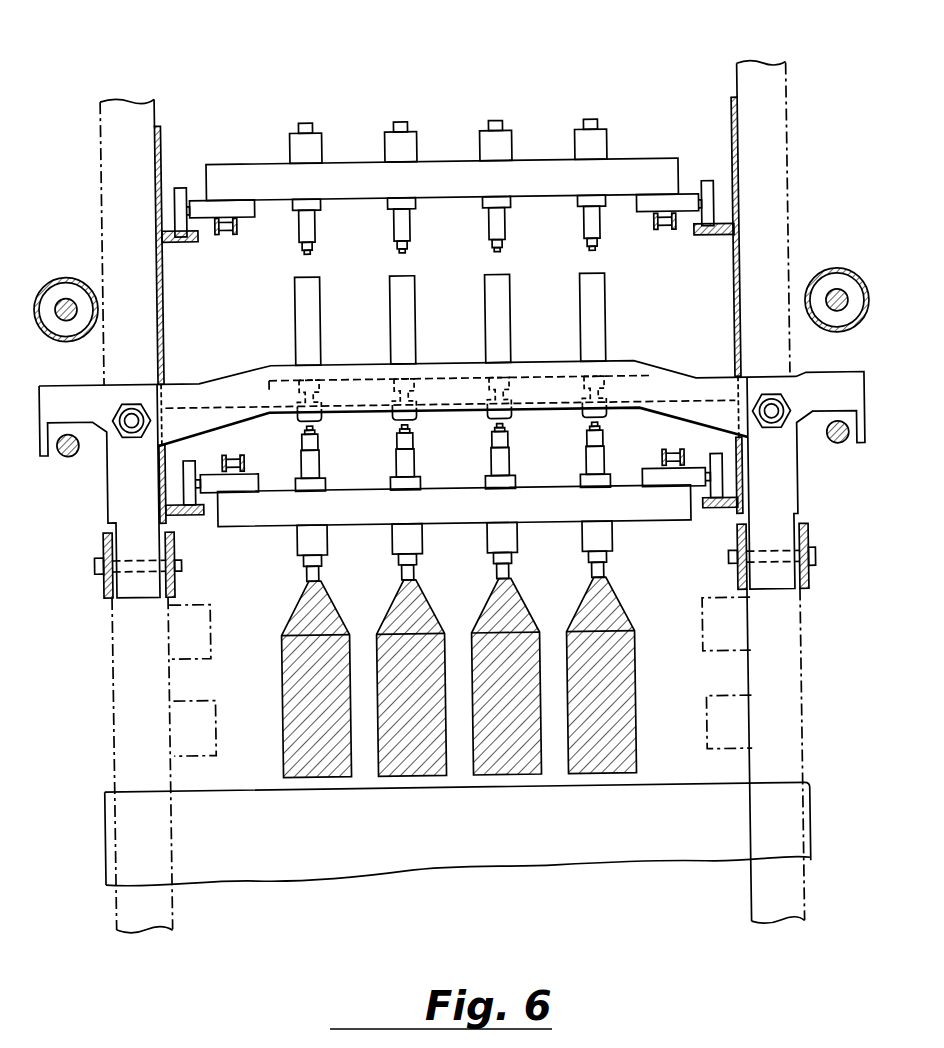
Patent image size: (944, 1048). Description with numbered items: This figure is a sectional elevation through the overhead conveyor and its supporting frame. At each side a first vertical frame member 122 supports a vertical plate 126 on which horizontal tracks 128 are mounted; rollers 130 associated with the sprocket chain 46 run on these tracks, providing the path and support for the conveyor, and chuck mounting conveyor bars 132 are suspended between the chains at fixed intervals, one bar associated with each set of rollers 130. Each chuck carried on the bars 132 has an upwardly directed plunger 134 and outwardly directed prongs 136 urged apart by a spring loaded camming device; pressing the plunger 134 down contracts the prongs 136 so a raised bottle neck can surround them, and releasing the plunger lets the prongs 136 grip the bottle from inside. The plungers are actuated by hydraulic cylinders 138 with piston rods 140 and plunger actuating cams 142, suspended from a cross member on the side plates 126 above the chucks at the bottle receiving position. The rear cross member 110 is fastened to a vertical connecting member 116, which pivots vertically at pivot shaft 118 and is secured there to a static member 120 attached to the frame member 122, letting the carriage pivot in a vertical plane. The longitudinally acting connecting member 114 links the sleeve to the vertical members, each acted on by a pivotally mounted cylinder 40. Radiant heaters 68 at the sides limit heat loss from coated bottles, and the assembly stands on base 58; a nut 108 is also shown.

The pivotally mounted cylinder 40 is at (66, 278).
The sprocket chain 46 is at (240, 228).
The base 58 is at (502, 853).
The radiant heater 68 is at (213, 717).
The nut 108 is at (137, 427).
The rear cross member 110 is at (262, 376).
The longitudinally acting connecting member 114 is at (68, 459).
The vertical connecting member 116 is at (112, 498).
The pivot shaft 118 is at (90, 572).
The static member 120 is at (100, 542).
The first vertical frame member 122 is at (112, 712).
The vertical plate 126 is at (161, 128).
The horizontal track 128 is at (180, 244).
The roller 130 is at (186, 190).
The chuck mounting conveyor bar 132 is at (430, 172).
The plunger 134 is at (392, 248).
The prong 136 is at (393, 122).
The hydraulic cylinder 138 is at (490, 303).
The piston rod 140 is at (655, 365).
The plunger actuating cam 142 is at (487, 418).